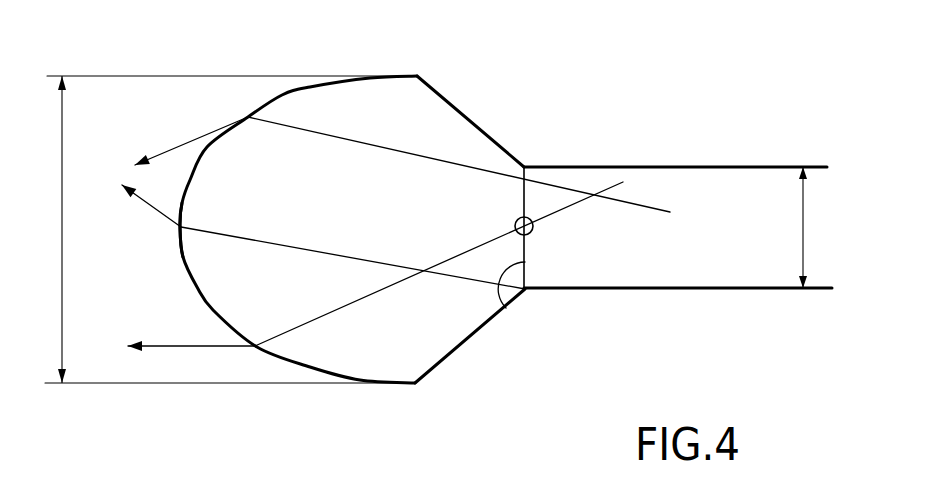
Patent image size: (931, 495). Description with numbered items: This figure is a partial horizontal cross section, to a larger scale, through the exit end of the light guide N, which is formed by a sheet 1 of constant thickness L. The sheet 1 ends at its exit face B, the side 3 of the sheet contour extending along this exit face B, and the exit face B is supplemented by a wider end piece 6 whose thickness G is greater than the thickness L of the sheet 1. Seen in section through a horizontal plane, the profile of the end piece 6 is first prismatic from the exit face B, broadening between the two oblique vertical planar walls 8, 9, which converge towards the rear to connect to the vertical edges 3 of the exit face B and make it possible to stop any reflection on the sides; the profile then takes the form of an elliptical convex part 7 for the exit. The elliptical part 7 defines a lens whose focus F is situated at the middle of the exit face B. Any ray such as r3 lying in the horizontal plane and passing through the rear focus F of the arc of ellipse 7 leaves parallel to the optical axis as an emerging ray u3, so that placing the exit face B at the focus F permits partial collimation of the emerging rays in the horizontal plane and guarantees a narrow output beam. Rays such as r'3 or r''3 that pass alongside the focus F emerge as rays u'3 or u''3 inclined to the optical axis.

The sheet 1 is at (743, 193).
The side extending along the exit face 3 is at (525, 166).
The end piece 6 is at (278, 90).
The elliptical convex part 7 is at (183, 258).
The oblique vertical planar wall 8 is at (463, 343).
The oblique vertical planar wall 9 is at (455, 108).
The guide N is at (687, 160).
The thickness of the sheet L is at (804, 237).
The thickness of the end piece G is at (62, 226).
The focus F is at (535, 234).
The exit face B is at (506, 306).
The ray r3 is at (322, 316).
The emerging ray u3 is at (175, 345).
The ray r'3 is at (353, 243).
The emerging ray u'3 is at (134, 217).
The ray r''3 is at (459, 152).
The emerging ray u''3 is at (177, 130).